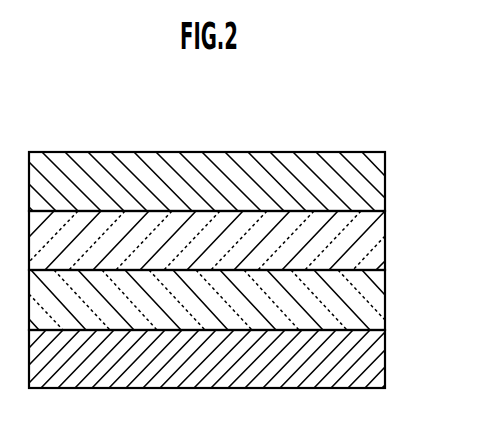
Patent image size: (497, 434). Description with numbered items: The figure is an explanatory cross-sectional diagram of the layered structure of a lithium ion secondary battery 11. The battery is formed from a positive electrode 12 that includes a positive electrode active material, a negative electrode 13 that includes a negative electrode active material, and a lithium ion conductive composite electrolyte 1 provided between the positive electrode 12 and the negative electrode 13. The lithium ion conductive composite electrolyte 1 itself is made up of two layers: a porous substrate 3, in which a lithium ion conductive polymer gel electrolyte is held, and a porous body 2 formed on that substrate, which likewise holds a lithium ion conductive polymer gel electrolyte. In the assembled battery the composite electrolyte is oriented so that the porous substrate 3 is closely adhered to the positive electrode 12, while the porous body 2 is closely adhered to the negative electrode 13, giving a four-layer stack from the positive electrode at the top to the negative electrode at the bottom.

The lithium ion secondary battery 11 is at (379, 130).
The positive electrode 12 is at (385, 178).
The lithium ion conductive composite electrolyte 1 is at (441, 225).
The porous substrate 3 is at (385, 240).
The porous body 2 is at (385, 298).
The negative electrode 13 is at (385, 357).